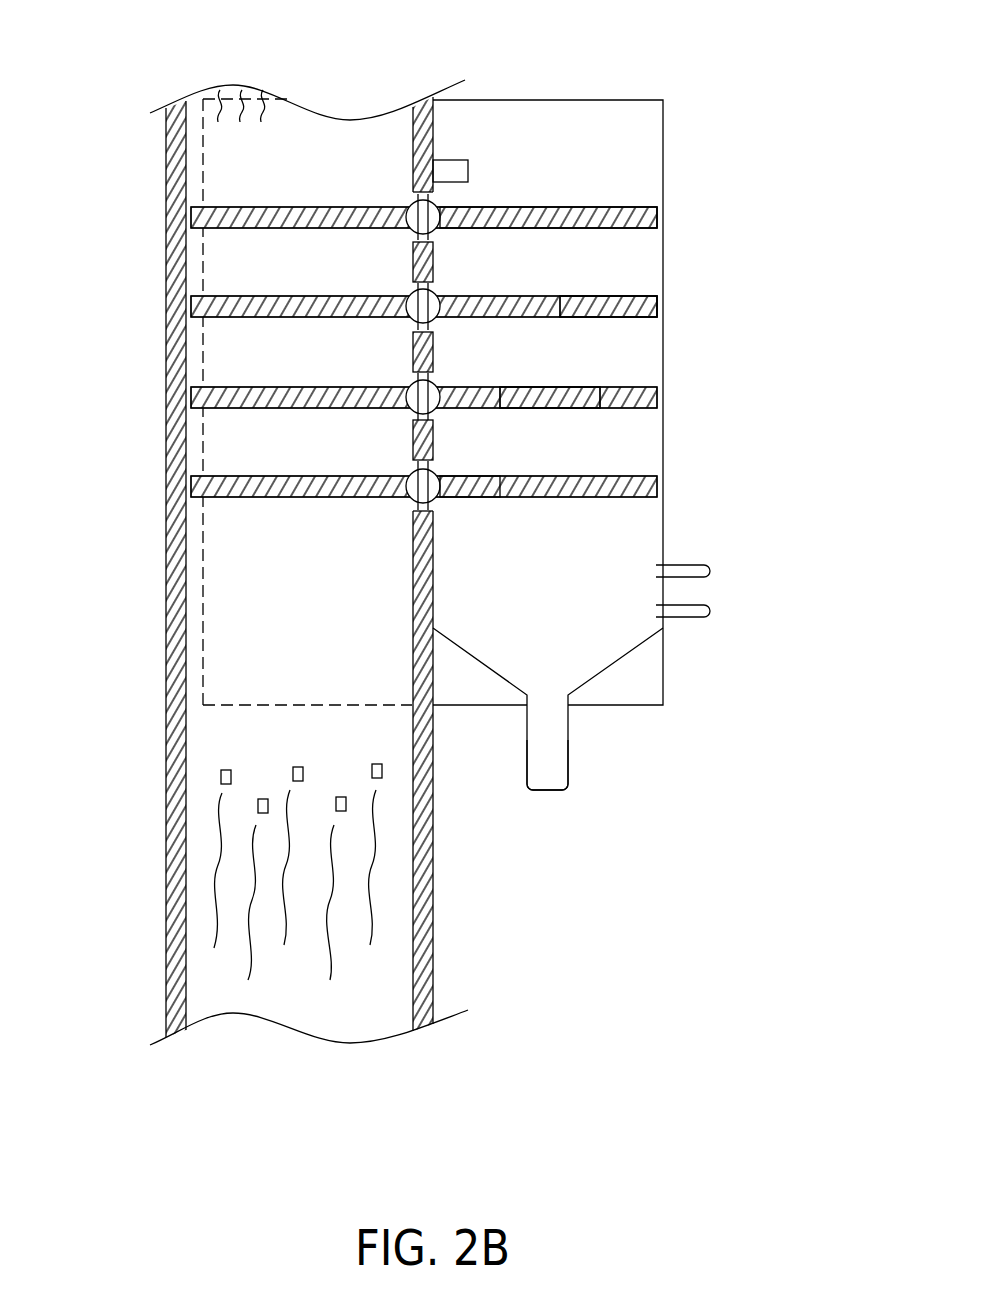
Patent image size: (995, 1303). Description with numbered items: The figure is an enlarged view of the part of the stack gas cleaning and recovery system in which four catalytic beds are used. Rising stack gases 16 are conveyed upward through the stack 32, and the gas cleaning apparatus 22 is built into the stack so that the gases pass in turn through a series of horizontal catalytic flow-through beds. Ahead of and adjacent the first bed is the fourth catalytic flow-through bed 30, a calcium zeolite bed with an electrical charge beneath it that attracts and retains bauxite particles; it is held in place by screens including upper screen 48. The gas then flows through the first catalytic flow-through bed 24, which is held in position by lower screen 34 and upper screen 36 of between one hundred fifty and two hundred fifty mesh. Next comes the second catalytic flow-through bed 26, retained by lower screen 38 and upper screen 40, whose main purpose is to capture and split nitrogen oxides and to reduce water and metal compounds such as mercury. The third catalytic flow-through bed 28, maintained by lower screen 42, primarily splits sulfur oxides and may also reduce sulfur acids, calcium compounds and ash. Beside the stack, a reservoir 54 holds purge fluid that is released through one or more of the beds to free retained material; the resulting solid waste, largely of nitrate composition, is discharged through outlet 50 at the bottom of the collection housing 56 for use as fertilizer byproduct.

The stack gases 16 is at (220, 908).
The gas cleaning apparatus 22 is at (612, 408).
The first catalytic flow-through bed 24 is at (197, 396).
The second catalytic flow-through bed 26 is at (199, 306).
The third catalytic flow-through bed 28 is at (199, 215).
The fourth catalytic flow-through bed 30 is at (200, 487).
The stack 32 is at (166, 817).
The lower screen 34 is at (540, 409).
The upper screen 36 is at (557, 386).
The lower screen 38 is at (630, 319).
The upper screen 40 is at (630, 295).
The lower screen 42 is at (512, 206).
The upper screen 48 is at (455, 475).
The outlet 50 is at (552, 780).
The reservoir 54 is at (575, 108).
The hopper 56 is at (608, 650).